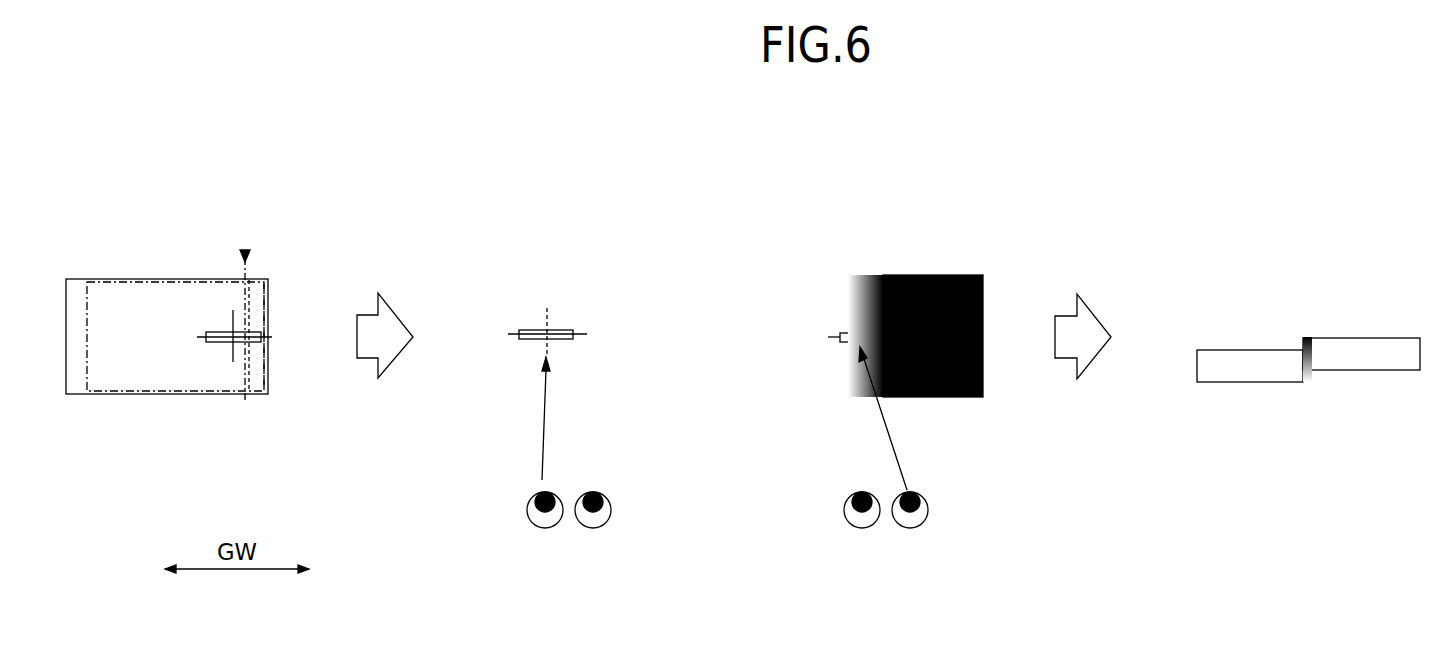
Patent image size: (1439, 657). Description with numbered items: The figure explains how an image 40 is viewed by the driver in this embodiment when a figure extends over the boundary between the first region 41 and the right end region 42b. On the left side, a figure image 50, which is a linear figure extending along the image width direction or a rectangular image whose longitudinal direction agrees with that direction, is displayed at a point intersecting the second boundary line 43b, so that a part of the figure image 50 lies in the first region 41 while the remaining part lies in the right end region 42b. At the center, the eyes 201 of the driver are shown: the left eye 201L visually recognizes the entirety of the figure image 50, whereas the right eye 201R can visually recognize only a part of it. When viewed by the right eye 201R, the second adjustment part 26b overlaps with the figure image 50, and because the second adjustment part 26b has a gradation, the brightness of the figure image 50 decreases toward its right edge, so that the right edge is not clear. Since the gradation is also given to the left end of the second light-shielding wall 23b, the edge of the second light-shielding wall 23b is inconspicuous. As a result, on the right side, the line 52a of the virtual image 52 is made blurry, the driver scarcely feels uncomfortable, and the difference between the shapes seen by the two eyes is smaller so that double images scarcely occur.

The image 40 is at (107, 308).
The first region 41 is at (223, 290).
The right end region 42b is at (258, 303).
The second boundary line 43b is at (245, 252).
The figure image 50 is at (220, 332).
The second light-shielding wall 23b is at (940, 275).
The second adjustment part 26b is at (865, 277).
The left eye 201L is at (542, 530).
The right eye 201R is at (590, 530).
The eyes 201 is at (667, 603).
The virtual image 52 is at (1267, 348).
The line 52a is at (1305, 338).